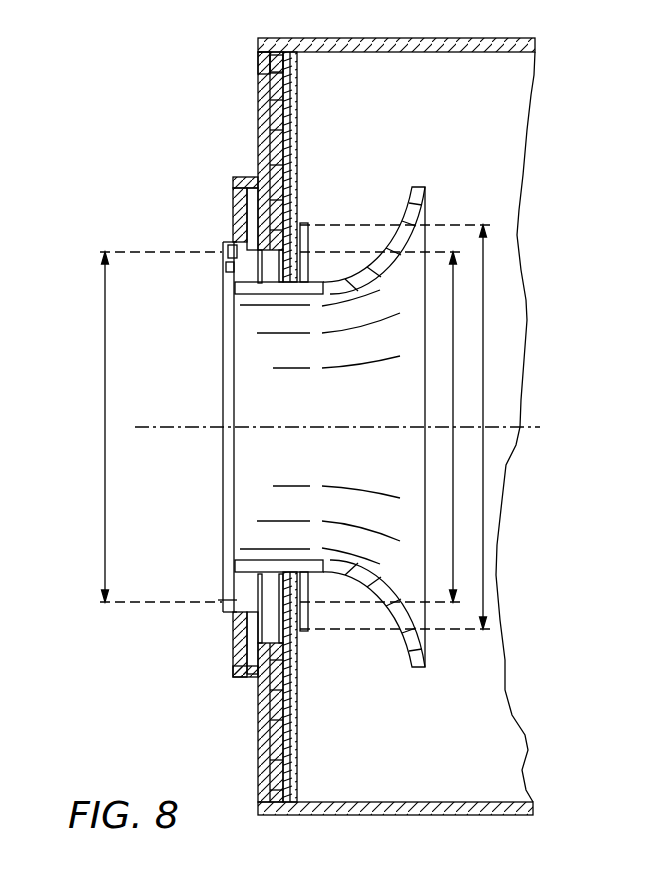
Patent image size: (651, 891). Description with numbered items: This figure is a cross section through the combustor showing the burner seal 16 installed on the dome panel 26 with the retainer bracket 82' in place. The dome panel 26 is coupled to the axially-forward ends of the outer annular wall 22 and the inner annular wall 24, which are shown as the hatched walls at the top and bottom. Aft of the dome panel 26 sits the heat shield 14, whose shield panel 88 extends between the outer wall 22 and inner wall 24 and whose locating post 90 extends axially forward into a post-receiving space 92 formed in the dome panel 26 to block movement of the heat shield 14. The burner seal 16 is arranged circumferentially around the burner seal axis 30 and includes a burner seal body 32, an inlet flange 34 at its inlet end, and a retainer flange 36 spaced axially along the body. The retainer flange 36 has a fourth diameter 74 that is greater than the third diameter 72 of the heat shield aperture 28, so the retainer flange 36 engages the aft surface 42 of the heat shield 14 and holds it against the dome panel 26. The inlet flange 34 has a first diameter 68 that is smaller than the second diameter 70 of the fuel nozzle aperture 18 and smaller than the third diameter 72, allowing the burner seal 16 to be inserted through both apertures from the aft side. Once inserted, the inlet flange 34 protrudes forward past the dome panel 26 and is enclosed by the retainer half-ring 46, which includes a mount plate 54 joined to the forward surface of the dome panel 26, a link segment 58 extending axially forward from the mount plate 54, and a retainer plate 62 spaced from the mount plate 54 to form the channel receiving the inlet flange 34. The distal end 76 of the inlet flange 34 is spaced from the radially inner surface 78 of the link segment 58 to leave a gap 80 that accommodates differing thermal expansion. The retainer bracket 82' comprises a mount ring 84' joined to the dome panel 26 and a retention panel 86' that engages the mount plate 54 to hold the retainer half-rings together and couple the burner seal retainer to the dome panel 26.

The heat shield 14 is at (318, 107).
The burner seal 16 is at (255, 381).
The fuel nozzle aperture 18 is at (263, 600).
The outer annular wall 22 is at (438, 38).
The inner annular wall 24 is at (424, 810).
The dome panel 26 is at (265, 56).
The heat shield aperture 28 is at (290, 600).
The burner seal axis 30 is at (527, 423).
The burner seal body 32 is at (338, 294).
The inlet flange 34 is at (238, 298).
The retainer flange 36 is at (305, 245).
The aft surface 42 is at (300, 165).
The first retainer half-ring 46 is at (214, 260).
The mount plate 54 is at (240, 200).
The link segment 58 is at (228, 272).
The retainer plate 62 is at (232, 256).
The first diameter 68 is at (104, 462).
The second diameter 70 is at (452, 370).
The third diameter 72 is at (452, 525).
The fourth diameter 74 is at (484, 347).
The distal end 76 is at (240, 605).
The radially inner surface 78 is at (262, 650).
The gap 80 is at (246, 622).
The retainer bracket 82' is at (218, 179).
The mount ring 84' is at (251, 195).
The retention panel 86' is at (205, 166).
The shield panel 88 is at (296, 96).
The locating post 90 is at (268, 78).
The post-receiving space 92 is at (282, 57).